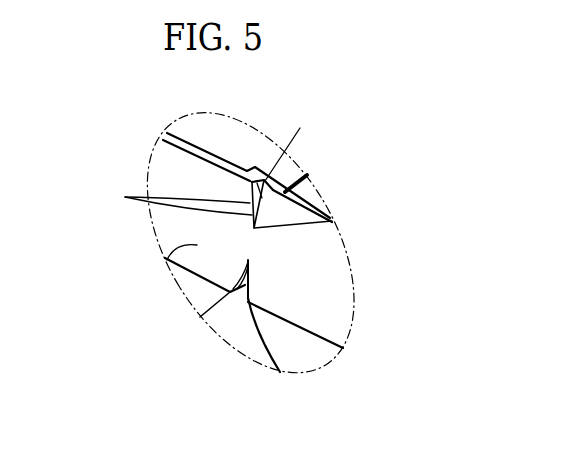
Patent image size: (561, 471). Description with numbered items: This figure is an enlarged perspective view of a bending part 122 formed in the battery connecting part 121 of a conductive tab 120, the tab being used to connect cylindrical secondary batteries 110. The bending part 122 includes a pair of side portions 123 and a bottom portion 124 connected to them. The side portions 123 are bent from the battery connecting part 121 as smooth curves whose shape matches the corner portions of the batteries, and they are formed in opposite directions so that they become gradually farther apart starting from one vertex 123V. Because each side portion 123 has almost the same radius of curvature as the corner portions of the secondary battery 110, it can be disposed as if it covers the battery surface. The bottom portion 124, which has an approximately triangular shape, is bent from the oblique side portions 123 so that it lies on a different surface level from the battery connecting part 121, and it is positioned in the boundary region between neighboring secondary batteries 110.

The secondary battery 110 is at (275, 340).
The conductive tab 120 is at (318, 346).
The battery connecting part 121 is at (167, 258).
The bending part 122 is at (298, 168).
The side portion 123 is at (135, 197).
The vertex 123V is at (254, 228).
The bottom portion 124 is at (283, 181).